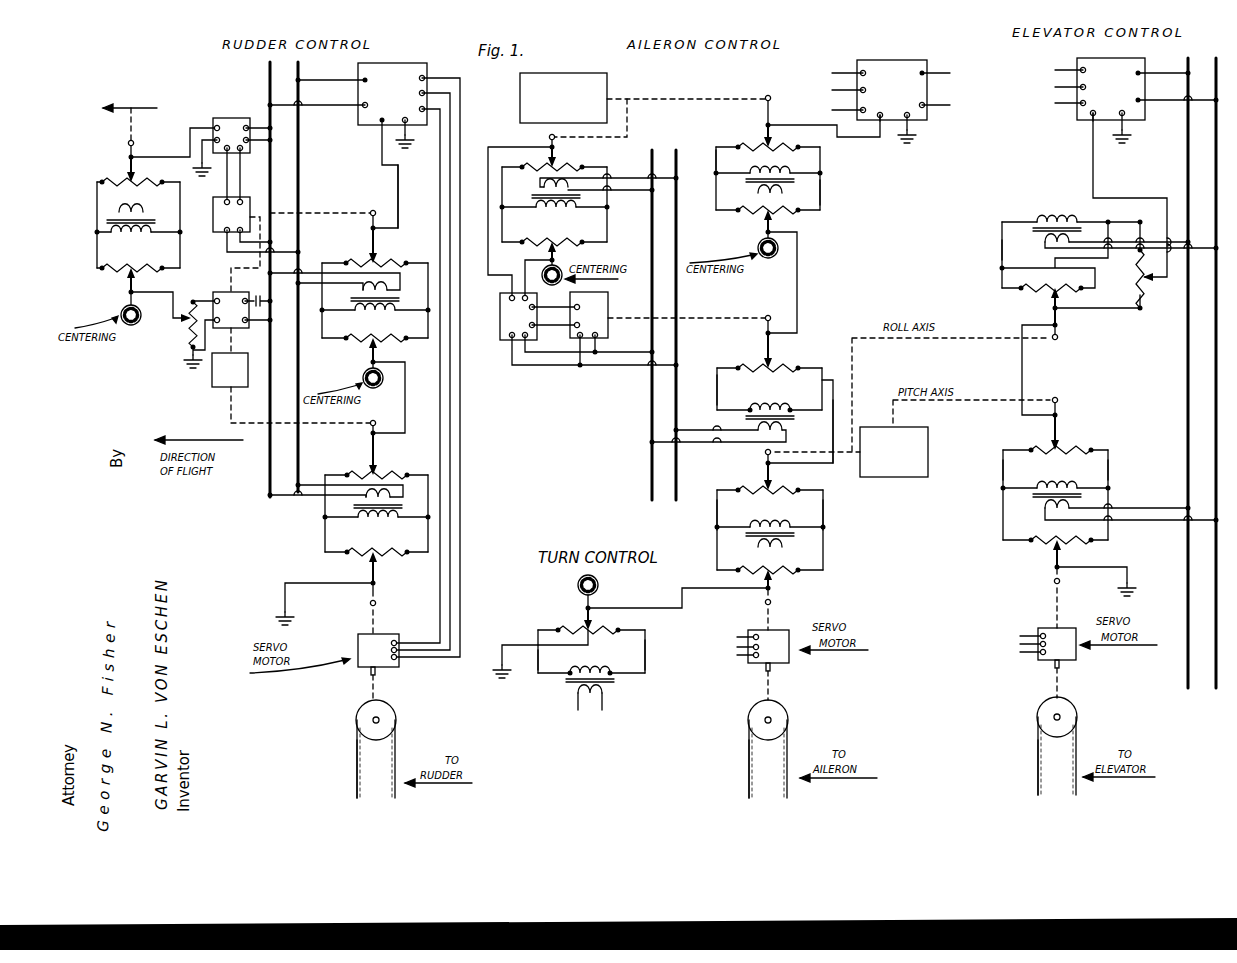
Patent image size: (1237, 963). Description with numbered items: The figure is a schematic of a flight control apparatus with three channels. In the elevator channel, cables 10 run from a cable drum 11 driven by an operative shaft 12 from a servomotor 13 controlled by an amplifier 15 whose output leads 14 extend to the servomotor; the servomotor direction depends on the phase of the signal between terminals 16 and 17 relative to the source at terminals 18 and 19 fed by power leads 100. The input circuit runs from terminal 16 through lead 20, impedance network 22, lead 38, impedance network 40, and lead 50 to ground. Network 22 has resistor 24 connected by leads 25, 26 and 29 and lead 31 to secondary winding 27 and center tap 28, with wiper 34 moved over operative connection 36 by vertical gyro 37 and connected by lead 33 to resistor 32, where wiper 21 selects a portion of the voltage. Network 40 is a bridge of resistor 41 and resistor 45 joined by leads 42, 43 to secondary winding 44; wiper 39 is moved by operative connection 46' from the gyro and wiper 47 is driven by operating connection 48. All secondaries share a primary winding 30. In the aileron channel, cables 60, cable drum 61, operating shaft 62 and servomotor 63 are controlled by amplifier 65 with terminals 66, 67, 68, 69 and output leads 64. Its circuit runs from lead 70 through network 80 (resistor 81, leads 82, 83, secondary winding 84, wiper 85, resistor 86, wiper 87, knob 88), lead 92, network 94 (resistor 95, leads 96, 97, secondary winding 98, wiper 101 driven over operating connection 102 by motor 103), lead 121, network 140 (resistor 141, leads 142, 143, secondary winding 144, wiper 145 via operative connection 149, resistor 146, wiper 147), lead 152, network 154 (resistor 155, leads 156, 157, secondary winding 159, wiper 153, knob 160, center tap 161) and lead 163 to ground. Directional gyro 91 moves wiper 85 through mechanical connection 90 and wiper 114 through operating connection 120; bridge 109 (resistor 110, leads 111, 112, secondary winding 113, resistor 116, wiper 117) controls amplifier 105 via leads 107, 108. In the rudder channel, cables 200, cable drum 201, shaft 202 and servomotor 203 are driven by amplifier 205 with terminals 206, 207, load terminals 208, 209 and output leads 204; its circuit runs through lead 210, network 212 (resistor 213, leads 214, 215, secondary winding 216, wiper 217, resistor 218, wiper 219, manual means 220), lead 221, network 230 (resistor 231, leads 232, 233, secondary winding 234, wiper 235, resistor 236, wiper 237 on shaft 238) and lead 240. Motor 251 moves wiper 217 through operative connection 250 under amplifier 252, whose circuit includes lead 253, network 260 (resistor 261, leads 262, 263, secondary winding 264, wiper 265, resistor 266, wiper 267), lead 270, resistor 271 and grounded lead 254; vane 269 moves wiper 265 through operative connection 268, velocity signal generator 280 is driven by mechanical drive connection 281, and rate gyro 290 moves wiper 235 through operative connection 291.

The cables 10 is at (1038, 752).
The cable drum 11 is at (1077, 718).
The operative shaft 12 is at (1062, 685).
The servomotor 13 is at (1068, 655).
The servo motor leads 14 is at (1055, 103).
The amplifier 15 is at (1135, 58).
The input terminal 16 is at (1093, 120).
The grounded terminal 17 is at (1125, 124).
The terminal 18 is at (1140, 73).
The terminal 19 is at (1140, 100).
The lead 20 is at (1093, 167).
The wiper 21 is at (1144, 280).
The impedance network 22 is at (1022, 269).
The resistor 24 is at (1060, 293).
The lead 25 is at (1095, 290).
The lead 26 is at (1002, 247).
The secondary winding 27 is at (1044, 222).
The center tap 28 is at (1045, 286).
The lead 29 is at (1108, 260).
The primary winding 30 is at (119, 210).
The lead 31 is at (1125, 222).
The resistor 32 is at (1142, 308).
The lead 33 is at (1125, 308).
The wiper 34 is at (1060, 327).
The operative connection 36 is at (995, 338).
The vertical gyro 37 is at (923, 478).
The lead 38 is at (1022, 370).
The contacting wiper 39 is at (1060, 412).
The impedance network 40 is at (1095, 472).
The resistor 41 is at (1075, 452).
The lead 42 is at (1003, 473).
The lead 43 is at (1108, 471).
The secondary winding 44 is at (1048, 482).
The resistor 45 is at (1080, 542).
The operative connection 46' is at (971, 416).
The wiper 47 is at (1050, 565).
The operating connection 48 is at (1053, 599).
The lead 50 is at (1105, 567).
The cables 60 is at (748, 750).
The cable drum 61 is at (787, 718).
The operating shaft 62 is at (779, 683).
The servomotor 63 is at (784, 630).
The output leads 64 is at (832, 110).
The amplifier 65 is at (893, 60).
The signal input terminal 66 is at (880, 123).
The grounded terminal 67 is at (915, 130).
The terminal 68 is at (924, 73).
The terminal 69 is at (927, 106).
The lead 70 is at (862, 138).
The impedance network 80 is at (810, 166).
The resistor 81 is at (750, 147).
The lead 82 is at (820, 195).
The lead 83 is at (716, 163).
The secondary winding 84 is at (763, 173).
The wiper 85 is at (772, 110).
The resistor 86 is at (795, 212).
The wiper 87 is at (760, 222).
The manual operating knob 88 is at (756, 246).
The mechanical connection 90 is at (712, 98).
The directional gyro 91 is at (594, 73).
The lead 92 is at (797, 269).
The impedance network 94 is at (745, 402).
The resistor 95 is at (780, 366).
The lead 96 is at (812, 368).
The lead 97 is at (717, 391).
The secondary winding 98 is at (782, 405).
The power leads 100 is at (270, 72).
The wiper 101 is at (768, 340).
The operating connection 102 is at (728, 316).
The motor 103 is at (604, 305).
The amplifier 105 is at (500, 327).
The lead 107 is at (490, 147).
The lead 108 is at (525, 264).
The Wheatstone bridge 109 is at (534, 229).
The resistor 110 is at (575, 165).
The lead 111 is at (504, 171).
The lead 112 is at (607, 200).
The secondary winding 113 is at (567, 212).
The wiper 114 is at (556, 147).
The resistor 116 is at (580, 246).
The wiper 117 is at (554, 253).
The operating connection 120 is at (630, 108).
The lead 121 is at (833, 468).
The impedance network 140 is at (820, 517).
The resistor 141 is at (754, 490).
The lead 142 is at (717, 519).
The lead 143 is at (823, 520).
The secondary winding 144 is at (778, 521).
The wiper 145 is at (765, 458).
The resistor 146 is at (790, 572).
The wiper 147 is at (764, 602).
The operative connection 149 is at (813, 452).
The lead 152 is at (686, 586).
The wiper 153 is at (582, 607).
The impedance network 154 is at (635, 649).
The resistor 155 is at (605, 630).
The lead 156 is at (542, 665).
The lead 157 is at (645, 657).
The secondary winding 159 is at (580, 667).
The turn control knob 160 is at (578, 586).
The center tap 161 is at (591, 664).
The lead 163 is at (512, 645).
The cables 200 is at (357, 768).
The cable drum 201 is at (356, 718).
The shaft 202 is at (378, 690).
The servomotor 203 is at (370, 666).
The output leads 204 is at (440, 580).
The amplifier 205 is at (410, 67).
The terminal 206 is at (382, 124).
The terminal 207 is at (414, 140).
The load terminal 208 is at (363, 111).
The load terminal 209 is at (362, 79).
The lead 210 is at (398, 186).
The impedance network 212 is at (422, 328).
The resistor 213 is at (392, 261).
The lead 214 is at (428, 276).
The lead 215 is at (325, 340).
The secondary winding 216 is at (362, 312).
The wiper 217 is at (373, 243).
The resistor 218 is at (400, 338).
The wiper 219 is at (370, 358).
The manual means 220 is at (363, 376).
The lead 221 is at (405, 400).
The impedance network 230 is at (420, 536).
The resistor 231 is at (392, 470).
The lead 232 is at (395, 488).
The lead 233 is at (364, 499).
The secondary winding 234 is at (361, 520).
The wiper 235 is at (370, 448).
The resistor 236 is at (375, 550).
The wiper 237 is at (376, 574).
The shaft 238 is at (380, 610).
The lead 240 is at (321, 583).
The operative connection 250 is at (350, 205).
The motor 251 is at (215, 232).
The amplifier 252 is at (232, 118).
The lead 253 is at (190, 142).
The grounded lead 254 is at (202, 169).
The impedance network 260 is at (146, 208).
The resistor 261 is at (127, 178).
The lead 262 is at (97, 218).
The lead 263 is at (227, 180).
The secondary winding 264 is at (116, 246).
The wiper 265 is at (128, 143).
The resistor 266 is at (166, 246).
The manually operable wiper 267 is at (129, 291).
The operative connection 268 is at (135, 125).
The vane 269 is at (137, 106).
The lead 270 is at (165, 292).
The resistor 271 is at (190, 335).
The velocity signal generator 280 is at (240, 328).
The mechanical drive connection 281 is at (231, 268).
The rate gyro 290 is at (212, 387).
The operative connection 291 is at (231, 415).